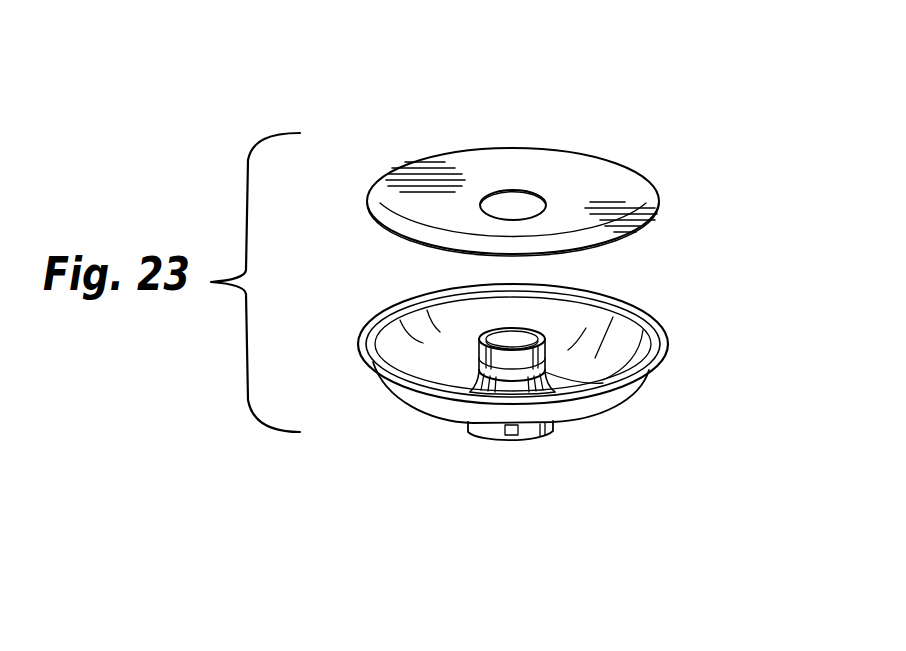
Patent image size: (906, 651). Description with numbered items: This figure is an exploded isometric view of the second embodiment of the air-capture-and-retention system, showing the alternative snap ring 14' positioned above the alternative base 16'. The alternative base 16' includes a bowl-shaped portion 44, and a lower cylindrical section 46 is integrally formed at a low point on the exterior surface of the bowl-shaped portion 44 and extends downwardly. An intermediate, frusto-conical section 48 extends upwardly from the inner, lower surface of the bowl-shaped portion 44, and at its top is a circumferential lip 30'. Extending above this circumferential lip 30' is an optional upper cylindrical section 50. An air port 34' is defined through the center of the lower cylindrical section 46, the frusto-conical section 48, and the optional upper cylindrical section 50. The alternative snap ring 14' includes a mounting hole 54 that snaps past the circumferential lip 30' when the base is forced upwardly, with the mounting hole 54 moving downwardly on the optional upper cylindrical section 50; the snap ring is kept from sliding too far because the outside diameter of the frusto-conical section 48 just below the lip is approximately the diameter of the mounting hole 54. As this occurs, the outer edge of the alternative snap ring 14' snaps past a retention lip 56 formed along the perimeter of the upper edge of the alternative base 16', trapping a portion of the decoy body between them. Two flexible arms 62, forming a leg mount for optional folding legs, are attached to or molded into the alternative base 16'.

The alternative snap ring 14' is at (567, 177).
The mounting hole 54 is at (523, 192).
The alternative base 16' is at (594, 371).
The retention lip 56 is at (642, 312).
The bowl-shaped portion 44 is at (428, 403).
The lower cylindrical section 46 is at (487, 428).
The flexible arms 62 is at (512, 435).
The air port 34' is at (419, 314).
The optional upper cylindrical section 50 is at (477, 357).
The intermediate frusto-conical section 48 is at (515, 392).
The circumferential lip 30' is at (626, 427).